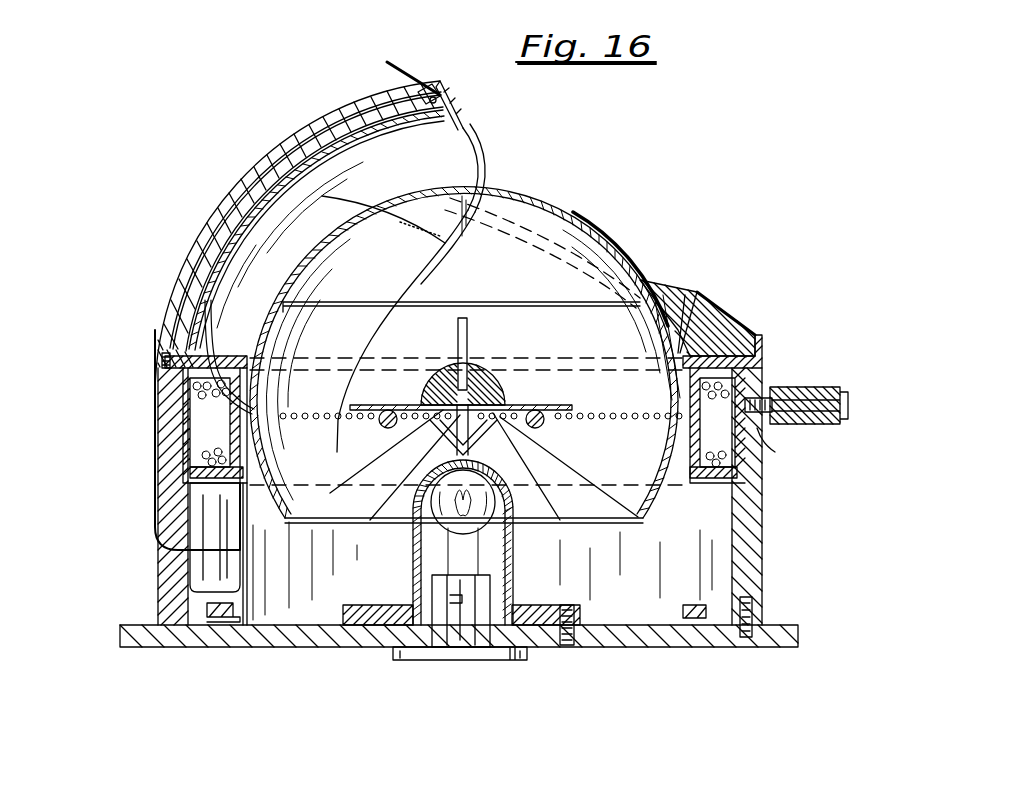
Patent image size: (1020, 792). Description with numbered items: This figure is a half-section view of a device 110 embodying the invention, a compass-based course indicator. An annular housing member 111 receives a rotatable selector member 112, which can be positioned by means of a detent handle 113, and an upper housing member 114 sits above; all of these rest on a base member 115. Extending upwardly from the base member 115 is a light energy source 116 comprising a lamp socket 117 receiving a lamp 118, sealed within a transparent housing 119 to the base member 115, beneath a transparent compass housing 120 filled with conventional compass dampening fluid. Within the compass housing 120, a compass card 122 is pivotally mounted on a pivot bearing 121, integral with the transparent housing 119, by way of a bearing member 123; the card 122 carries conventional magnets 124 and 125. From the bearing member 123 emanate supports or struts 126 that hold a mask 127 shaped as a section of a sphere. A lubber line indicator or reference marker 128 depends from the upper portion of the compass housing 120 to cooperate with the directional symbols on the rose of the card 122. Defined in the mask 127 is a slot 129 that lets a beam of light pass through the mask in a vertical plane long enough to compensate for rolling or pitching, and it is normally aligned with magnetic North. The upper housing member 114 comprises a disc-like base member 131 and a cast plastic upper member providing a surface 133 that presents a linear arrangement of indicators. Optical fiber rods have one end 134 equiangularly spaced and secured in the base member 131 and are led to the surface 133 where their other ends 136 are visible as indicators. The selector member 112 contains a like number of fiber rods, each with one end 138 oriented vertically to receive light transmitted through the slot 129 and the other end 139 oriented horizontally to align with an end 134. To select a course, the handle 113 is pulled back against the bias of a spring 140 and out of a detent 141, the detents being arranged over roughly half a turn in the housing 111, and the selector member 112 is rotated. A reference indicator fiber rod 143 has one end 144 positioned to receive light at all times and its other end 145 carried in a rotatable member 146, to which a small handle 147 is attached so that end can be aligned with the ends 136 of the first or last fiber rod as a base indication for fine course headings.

The device 110 is at (665, 154).
The annular housing member 111 is at (752, 537).
The rotatable selector member 112 is at (740, 488).
The detent handle 113 is at (810, 386).
The upper housing member 114 is at (730, 322).
The base member 115 is at (302, 636).
The light energy source 116 is at (405, 567).
The lamp socket 117 is at (478, 597).
The lamp 118 is at (487, 503).
The transparent housing 119 is at (509, 545).
The transparent compass housing 120 is at (632, 272).
The pivot bearing 121 is at (430, 440).
The compass card 122 is at (560, 404).
The bearing member 123 is at (468, 395).
The magnet 124 is at (383, 424).
The magnet 125 is at (538, 427).
The supports or struts 126 is at (398, 487).
The mask 127 is at (497, 318).
The lubber line indicator or reference marker 128 is at (345, 380).
The slot 129 is at (460, 340).
The disc-like base member 131 is at (170, 367).
The surface 133 is at (457, 127).
The end of fiber rod 134 is at (200, 358).
The other end of fiber rod 136 is at (452, 113).
The end of fiber rod 138 is at (247, 413).
The other end of fiber rod 139 is at (200, 387).
The spring 140 is at (790, 414).
The detent 141 is at (765, 440).
The reference indicator fiber rod 143 is at (154, 463).
The end of reference indicator fiber rod 144 is at (219, 553).
The other end of reference indicator fiber rod 145 is at (437, 100).
The rotatable member 146 is at (430, 92).
The small handle 147 is at (395, 70).